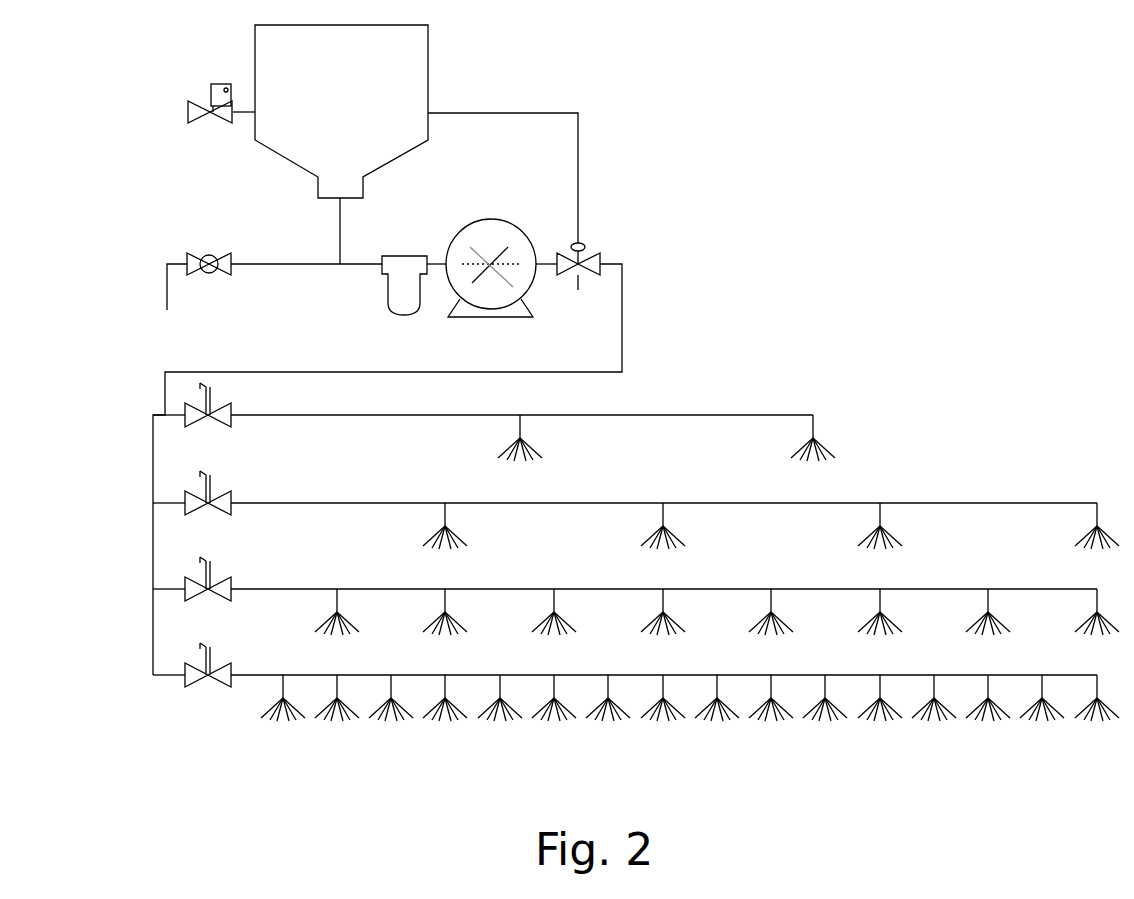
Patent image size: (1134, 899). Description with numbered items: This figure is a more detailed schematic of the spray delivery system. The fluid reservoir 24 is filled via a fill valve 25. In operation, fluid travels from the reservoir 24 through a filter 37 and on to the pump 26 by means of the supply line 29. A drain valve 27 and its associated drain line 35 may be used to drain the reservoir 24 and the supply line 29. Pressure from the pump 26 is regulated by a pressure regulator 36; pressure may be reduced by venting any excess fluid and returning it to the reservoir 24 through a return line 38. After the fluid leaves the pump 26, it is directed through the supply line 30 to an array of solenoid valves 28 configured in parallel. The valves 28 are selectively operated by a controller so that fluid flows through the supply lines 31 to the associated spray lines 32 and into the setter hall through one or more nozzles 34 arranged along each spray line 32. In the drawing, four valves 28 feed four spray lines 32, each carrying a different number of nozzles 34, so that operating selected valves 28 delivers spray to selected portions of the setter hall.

The fluid reservoir 24 is at (355, 127).
The fill valve 25 is at (212, 120).
The pump 26 is at (490, 323).
The drain valve 27 is at (210, 242).
The solenoid valves 28 is at (215, 401).
The supply line 29 is at (345, 236).
The supply line 30 is at (352, 370).
The supply lines 31 is at (358, 410).
The spray lines 32 is at (750, 413).
The nozzles 34 is at (505, 463).
The drain line 35 is at (152, 287).
The pressure regulator 36 is at (578, 285).
The filter 37 is at (383, 287).
The return line 38 is at (567, 122).